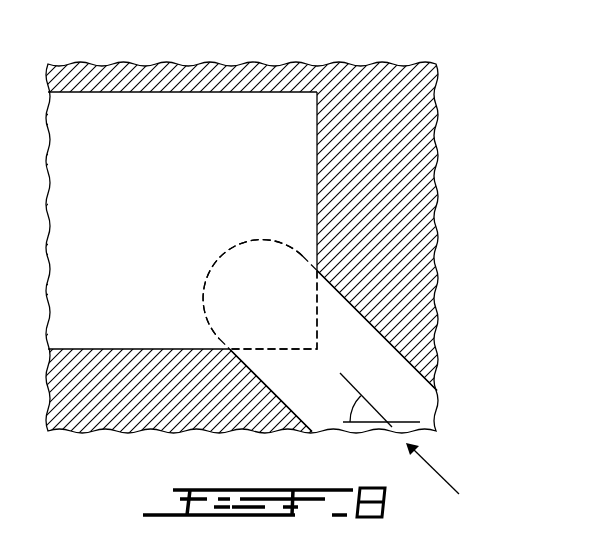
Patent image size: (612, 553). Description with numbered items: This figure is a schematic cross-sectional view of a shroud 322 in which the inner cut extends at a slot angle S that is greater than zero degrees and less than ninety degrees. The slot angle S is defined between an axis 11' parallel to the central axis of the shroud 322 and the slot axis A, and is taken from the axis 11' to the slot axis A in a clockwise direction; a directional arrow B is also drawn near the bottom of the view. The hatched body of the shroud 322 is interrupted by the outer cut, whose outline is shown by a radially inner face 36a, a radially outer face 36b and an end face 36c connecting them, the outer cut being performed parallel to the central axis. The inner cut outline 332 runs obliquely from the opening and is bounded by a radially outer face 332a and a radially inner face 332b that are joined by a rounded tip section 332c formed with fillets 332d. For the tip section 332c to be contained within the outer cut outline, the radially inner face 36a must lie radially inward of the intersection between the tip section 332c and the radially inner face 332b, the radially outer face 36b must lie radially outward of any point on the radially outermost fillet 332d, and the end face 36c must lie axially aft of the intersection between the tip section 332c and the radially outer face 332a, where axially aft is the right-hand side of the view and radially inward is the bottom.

The shroud 322 is at (355, 53).
The radially inner face 36a is at (115, 349).
The radially outer face 36b is at (126, 92).
The end face 36c is at (317, 152).
The inner cut outline 332 is at (343, 297).
The radially outer face of inner cut outline 332a is at (377, 331).
The radially inner face of inner cut outline 332b is at (250, 349).
The tip section 332c is at (232, 243).
The fillets 332d is at (277, 248).
The slot axis A is at (353, 386).
The slot angle S is at (352, 411).
The axis parallel to the central axis 11' is at (421, 411).
The insertion direction B is at (438, 468).